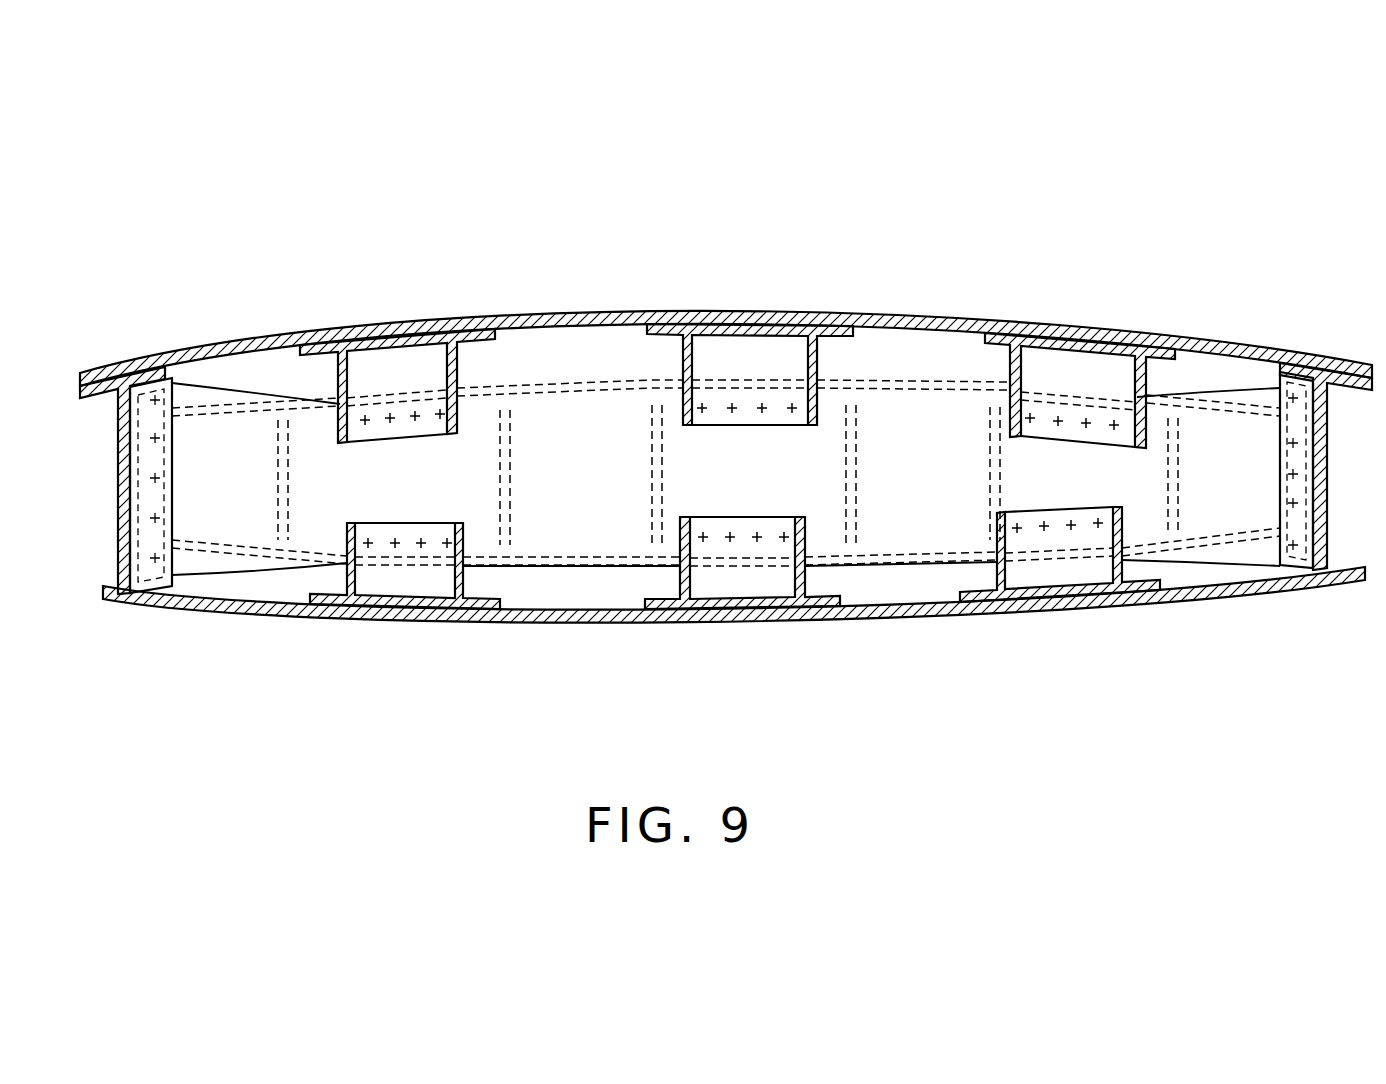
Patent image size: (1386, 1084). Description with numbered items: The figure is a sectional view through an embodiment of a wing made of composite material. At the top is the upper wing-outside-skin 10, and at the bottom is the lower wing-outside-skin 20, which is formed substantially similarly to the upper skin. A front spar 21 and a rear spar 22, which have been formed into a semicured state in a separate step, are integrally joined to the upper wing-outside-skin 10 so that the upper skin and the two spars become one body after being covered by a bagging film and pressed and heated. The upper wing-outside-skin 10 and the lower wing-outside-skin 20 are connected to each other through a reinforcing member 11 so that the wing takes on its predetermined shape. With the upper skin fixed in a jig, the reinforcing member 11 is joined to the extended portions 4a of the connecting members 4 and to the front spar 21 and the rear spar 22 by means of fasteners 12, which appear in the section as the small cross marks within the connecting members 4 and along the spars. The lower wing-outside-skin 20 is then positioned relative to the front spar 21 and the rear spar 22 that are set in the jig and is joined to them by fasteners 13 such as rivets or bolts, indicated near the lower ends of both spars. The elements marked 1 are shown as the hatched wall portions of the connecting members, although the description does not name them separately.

The reinforcing member 1 is at (338, 347).
The connecting member 4 is at (390, 378).
The extended portion 4a is at (428, 400).
The upper wing-outside-skin 10 is at (894, 304).
The reinforcing member 11 is at (323, 478).
The fastener 12 is at (345, 412).
The fastener 13 is at (160, 598).
The lower wing-outside-skin 20 is at (851, 628).
The front spar 21 is at (120, 380).
The rear spar 22 is at (1320, 372).